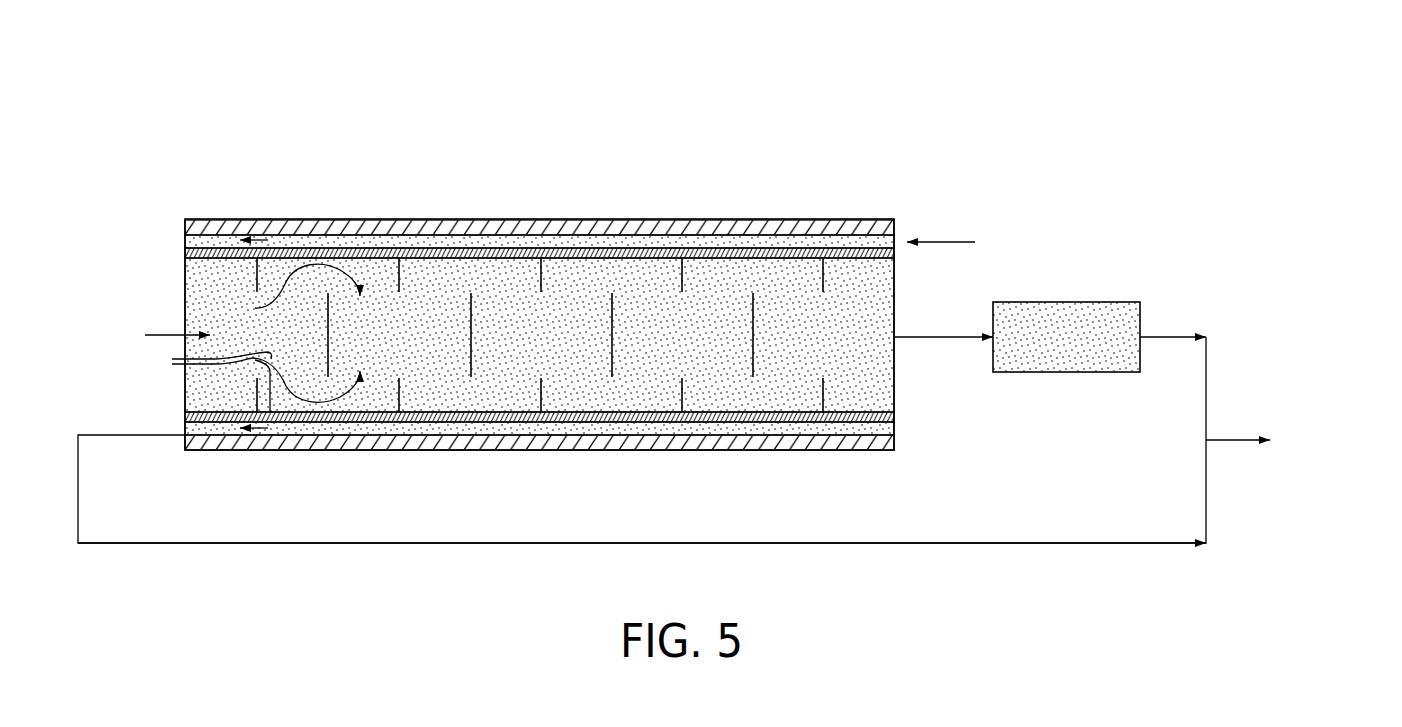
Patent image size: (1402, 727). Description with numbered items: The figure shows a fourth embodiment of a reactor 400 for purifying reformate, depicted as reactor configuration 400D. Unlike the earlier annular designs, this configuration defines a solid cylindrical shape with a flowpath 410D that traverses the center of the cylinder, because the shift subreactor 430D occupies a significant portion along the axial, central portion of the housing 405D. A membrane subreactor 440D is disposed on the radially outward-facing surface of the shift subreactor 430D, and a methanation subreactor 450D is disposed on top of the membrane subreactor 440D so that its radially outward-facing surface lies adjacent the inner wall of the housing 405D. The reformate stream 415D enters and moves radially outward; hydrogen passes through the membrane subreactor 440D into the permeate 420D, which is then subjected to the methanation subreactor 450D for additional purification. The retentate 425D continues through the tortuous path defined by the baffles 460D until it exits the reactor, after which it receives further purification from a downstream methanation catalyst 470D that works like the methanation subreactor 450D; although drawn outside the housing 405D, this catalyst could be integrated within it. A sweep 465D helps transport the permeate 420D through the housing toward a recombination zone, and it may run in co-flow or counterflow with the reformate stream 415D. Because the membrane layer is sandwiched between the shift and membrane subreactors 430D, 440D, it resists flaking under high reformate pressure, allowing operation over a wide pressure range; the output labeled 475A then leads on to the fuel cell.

The reactor 400 is at (618, 71).
The reactor configuration 400D is at (843, 131).
The housing 405D is at (185, 224).
The flowpath 410D is at (160, 332).
The reformate stream 415D is at (187, 363).
The permeate 420D is at (255, 308).
The retentate 425D is at (345, 252).
The shift subreactor 430D is at (653, 317).
The membrane subreactor 440D is at (557, 243).
The methanation subreactor 450D is at (800, 231).
The baffles 460D is at (470, 317).
The sweep 465D is at (943, 233).
The downstream methanation catalyst 470D is at (1068, 315).
The reformate outlet to fuel cell 475A is at (1208, 436).